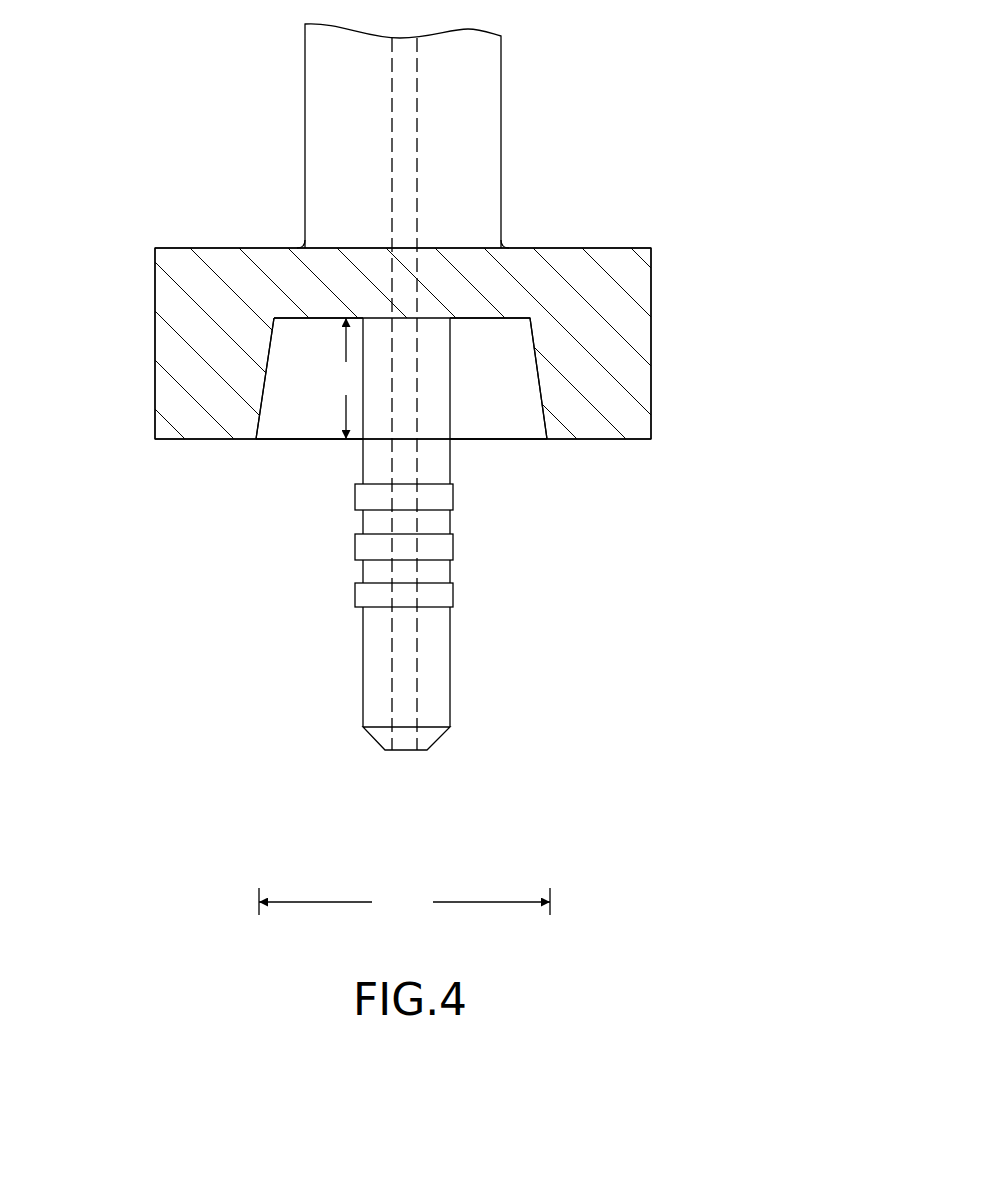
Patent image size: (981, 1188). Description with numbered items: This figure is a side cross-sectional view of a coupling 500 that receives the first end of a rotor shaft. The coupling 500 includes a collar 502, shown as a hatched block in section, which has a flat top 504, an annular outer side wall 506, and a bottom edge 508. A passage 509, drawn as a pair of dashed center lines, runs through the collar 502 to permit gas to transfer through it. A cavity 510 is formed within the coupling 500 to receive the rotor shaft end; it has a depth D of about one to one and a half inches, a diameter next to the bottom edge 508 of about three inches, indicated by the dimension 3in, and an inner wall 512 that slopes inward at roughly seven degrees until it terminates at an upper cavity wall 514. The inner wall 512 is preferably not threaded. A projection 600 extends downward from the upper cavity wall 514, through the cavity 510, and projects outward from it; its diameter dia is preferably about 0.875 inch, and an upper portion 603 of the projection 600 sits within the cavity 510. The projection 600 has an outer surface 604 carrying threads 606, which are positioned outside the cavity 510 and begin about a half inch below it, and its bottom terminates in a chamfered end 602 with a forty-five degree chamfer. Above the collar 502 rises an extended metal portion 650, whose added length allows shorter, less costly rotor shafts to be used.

The coupling 500 is at (659, 248).
The collar 502 is at (155, 333).
The flat top 504 is at (209, 248).
The annular outer side wall 506 is at (155, 377).
The bottom edge 508 is at (180, 440).
The passage 509 is at (403, 296).
The cavity 510 is at (303, 440).
The inner wall 512 is at (259, 426).
The upper cavity wall 514 is at (297, 318).
The projection 600 is at (398, 555).
The chamfered end 602 is at (372, 741).
The upper shaft portion of pin 603 is at (363, 455).
The outer surface 604 is at (452, 657).
The threads 606 is at (460, 484).
The extended metal portion 650 is at (503, 95).
The depth of cavity D is at (345, 378).
The cavity diameter 3in is at (404, 902).
The projection diameter dia is at (453, 698).